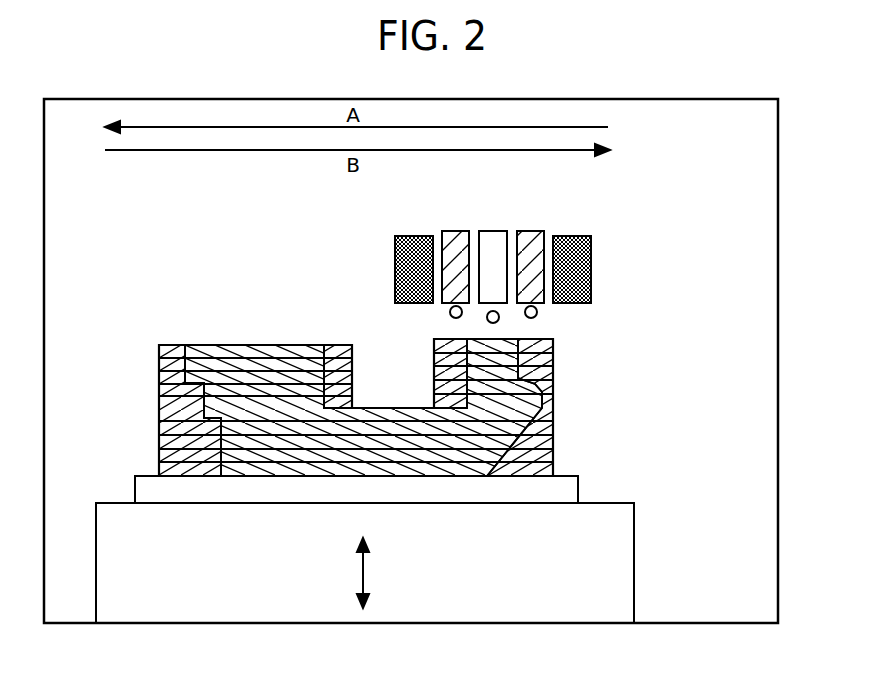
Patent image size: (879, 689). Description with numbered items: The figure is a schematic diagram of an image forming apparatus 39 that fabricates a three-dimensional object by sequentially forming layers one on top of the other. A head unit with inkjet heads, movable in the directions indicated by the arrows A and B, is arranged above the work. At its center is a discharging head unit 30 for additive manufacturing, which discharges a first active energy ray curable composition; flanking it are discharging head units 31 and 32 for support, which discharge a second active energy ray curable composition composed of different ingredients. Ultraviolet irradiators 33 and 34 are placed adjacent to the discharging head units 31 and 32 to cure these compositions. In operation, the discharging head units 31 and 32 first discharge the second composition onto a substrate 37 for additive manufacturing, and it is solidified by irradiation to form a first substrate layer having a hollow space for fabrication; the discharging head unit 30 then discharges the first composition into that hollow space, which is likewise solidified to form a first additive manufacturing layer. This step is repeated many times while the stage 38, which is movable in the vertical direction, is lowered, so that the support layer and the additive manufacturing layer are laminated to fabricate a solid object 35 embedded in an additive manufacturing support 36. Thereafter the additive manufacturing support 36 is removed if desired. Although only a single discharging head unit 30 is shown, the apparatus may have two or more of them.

The discharging head unit for additive manufacturing 30 is at (494, 231).
The discharging head unit for support 31 is at (456, 231).
The discharging head unit for support 32 is at (530, 231).
The ultraviolet irradiator 33 is at (395, 258).
The ultraviolet irradiator 34 is at (592, 258).
The solid object 35 is at (255, 345).
The additive manufacturing support 36 is at (553, 358).
The substrate for additive manufacturing 37 is at (578, 490).
The stage 38 is at (634, 521).
The image forming apparatus 39 is at (778, 122).